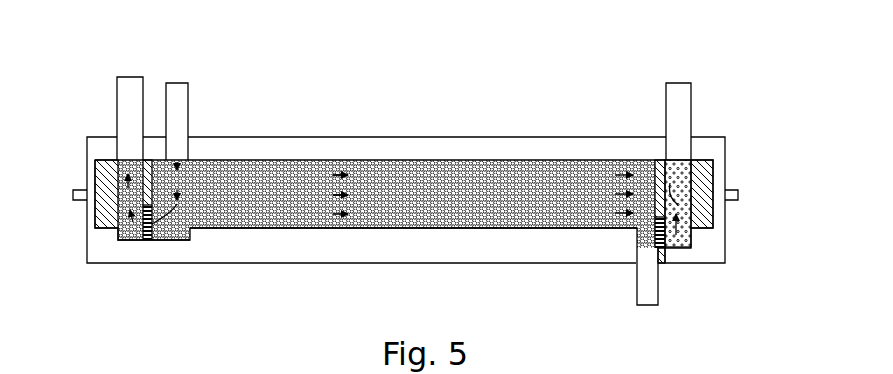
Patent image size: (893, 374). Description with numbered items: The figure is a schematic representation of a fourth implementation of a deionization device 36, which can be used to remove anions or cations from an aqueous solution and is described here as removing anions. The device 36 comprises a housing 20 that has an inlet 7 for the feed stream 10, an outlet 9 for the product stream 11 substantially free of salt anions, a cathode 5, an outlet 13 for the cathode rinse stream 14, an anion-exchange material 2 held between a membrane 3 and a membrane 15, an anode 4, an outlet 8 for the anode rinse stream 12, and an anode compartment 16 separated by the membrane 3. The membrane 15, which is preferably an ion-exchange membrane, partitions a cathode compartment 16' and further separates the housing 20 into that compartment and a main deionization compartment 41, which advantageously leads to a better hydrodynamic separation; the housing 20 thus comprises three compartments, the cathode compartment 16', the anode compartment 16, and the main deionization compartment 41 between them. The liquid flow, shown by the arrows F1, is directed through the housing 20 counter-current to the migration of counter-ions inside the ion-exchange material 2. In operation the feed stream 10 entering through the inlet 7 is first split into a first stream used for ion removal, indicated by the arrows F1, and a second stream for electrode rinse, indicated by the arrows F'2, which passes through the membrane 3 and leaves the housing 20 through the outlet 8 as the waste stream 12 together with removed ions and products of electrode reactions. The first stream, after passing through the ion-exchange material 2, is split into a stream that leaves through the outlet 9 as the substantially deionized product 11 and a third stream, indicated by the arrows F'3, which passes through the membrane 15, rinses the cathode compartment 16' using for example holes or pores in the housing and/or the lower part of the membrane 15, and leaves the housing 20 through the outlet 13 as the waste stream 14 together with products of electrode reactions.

The anion-exchange material 2 is at (265, 202).
The membrane 3 is at (672, 183).
The anode 4 is at (729, 190).
The cathode 5 is at (102, 178).
The inlet 7 is at (637, 292).
The outlet 8 is at (666, 98).
The outlet 9 is at (188, 96).
The feed stream 10 is at (648, 240).
The product stream 11 is at (176, 135).
The anode rinse stream 12 is at (678, 143).
The outlet 13 is at (117, 96).
The cathode rinse stream 14 is at (130, 135).
The membrane 15 is at (160, 240).
The anode compartment 16 is at (713, 175).
The cathode compartment 16' is at (115, 249).
The housing 20 is at (303, 250).
The deionization device 36 is at (498, 106).
The main deionization compartment 41 is at (540, 230).
The liquid flow F1 is at (375, 160).
The electrode rinse stream F'2 is at (692, 245).
The third stream F'3 is at (132, 241).